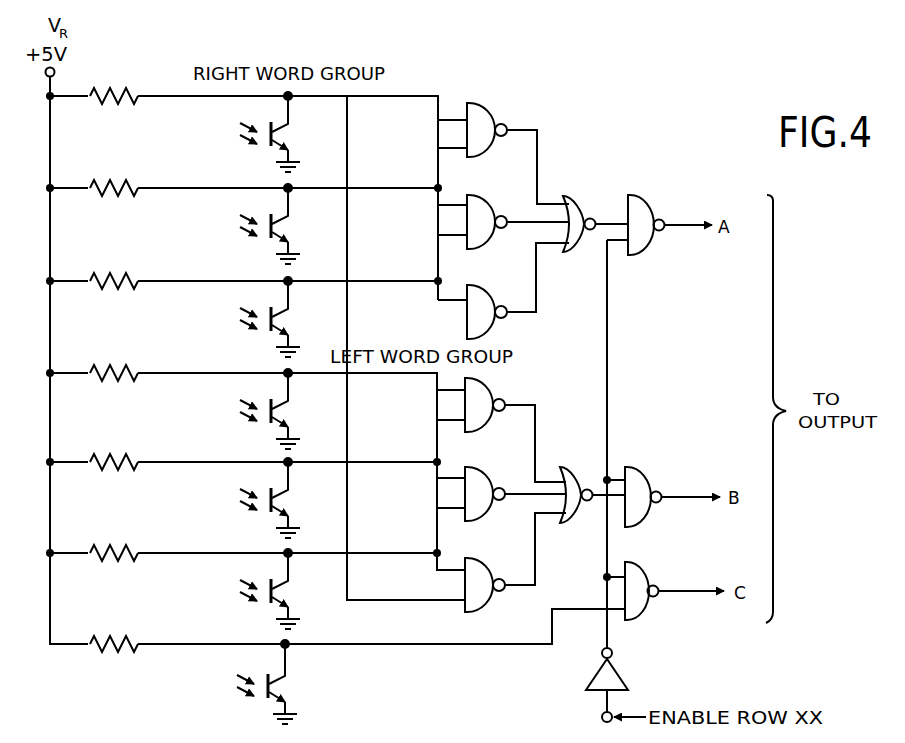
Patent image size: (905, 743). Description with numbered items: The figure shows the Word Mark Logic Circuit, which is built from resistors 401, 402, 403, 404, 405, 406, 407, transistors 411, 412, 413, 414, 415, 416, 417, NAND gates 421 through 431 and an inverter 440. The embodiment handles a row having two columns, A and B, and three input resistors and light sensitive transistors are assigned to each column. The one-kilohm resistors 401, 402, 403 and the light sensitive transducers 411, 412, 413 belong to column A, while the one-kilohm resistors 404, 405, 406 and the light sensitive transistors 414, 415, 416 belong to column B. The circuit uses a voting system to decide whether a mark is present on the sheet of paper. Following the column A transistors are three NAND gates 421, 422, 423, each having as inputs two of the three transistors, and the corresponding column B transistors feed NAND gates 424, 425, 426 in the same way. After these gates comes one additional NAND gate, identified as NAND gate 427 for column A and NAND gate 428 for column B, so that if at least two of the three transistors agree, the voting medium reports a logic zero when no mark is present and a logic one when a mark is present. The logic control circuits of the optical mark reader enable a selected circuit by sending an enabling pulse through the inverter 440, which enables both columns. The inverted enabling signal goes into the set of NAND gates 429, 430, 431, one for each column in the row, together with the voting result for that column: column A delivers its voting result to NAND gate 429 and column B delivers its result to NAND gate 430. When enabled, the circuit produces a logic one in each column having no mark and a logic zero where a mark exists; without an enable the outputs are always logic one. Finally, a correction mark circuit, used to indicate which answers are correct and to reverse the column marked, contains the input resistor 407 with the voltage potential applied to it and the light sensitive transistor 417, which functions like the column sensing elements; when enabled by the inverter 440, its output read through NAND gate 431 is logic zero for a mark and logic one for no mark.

The 1K ohm resistor 401 is at (118, 106).
The 1K ohm resistor 402 is at (118, 198).
The 1K ohm resistor 403 is at (118, 291).
The 1K ohm resistor 404 is at (118, 383).
The 1K ohm resistor 405 is at (118, 472).
The 1K ohm resistor 406 is at (118, 563).
The input resistor 407 is at (118, 654).
The light sensitive transistor 411 is at (287, 153).
The light sensitive transistor 412 is at (287, 238).
The light sensitive transistor 413 is at (287, 323).
The light sensitive transistor 414 is at (287, 415).
The light sensitive transistor 415 is at (287, 505).
The light sensitive transistor 416 is at (287, 596).
The light sensitive transistor 417 is at (294, 687).
The NAND gate 421 is at (467, 133).
The NAND gate 422 is at (467, 227).
The NAND gate 423 is at (467, 312).
The NAND gate 424 is at (465, 409).
The NAND gate 425 is at (465, 500).
The NAND gate 426 is at (465, 588).
The NAND gate 427 is at (573, 199).
The NAND gate 428 is at (575, 456).
The NAND gate 429 is at (645, 247).
The NAND gate 430 is at (645, 473).
The NAND gate 431 is at (645, 577).
The inverter 440 is at (618, 673).